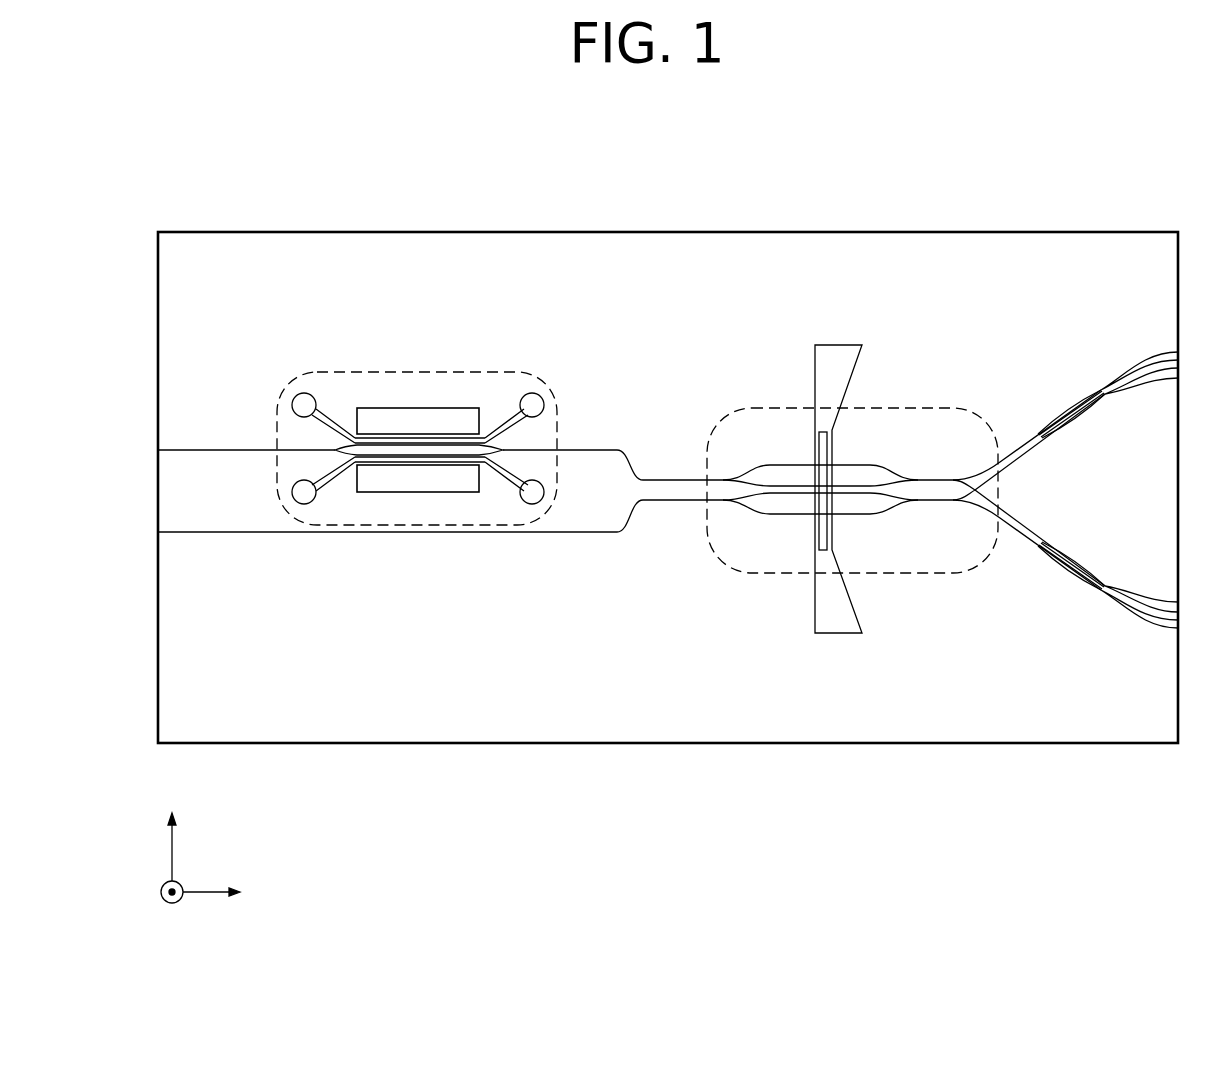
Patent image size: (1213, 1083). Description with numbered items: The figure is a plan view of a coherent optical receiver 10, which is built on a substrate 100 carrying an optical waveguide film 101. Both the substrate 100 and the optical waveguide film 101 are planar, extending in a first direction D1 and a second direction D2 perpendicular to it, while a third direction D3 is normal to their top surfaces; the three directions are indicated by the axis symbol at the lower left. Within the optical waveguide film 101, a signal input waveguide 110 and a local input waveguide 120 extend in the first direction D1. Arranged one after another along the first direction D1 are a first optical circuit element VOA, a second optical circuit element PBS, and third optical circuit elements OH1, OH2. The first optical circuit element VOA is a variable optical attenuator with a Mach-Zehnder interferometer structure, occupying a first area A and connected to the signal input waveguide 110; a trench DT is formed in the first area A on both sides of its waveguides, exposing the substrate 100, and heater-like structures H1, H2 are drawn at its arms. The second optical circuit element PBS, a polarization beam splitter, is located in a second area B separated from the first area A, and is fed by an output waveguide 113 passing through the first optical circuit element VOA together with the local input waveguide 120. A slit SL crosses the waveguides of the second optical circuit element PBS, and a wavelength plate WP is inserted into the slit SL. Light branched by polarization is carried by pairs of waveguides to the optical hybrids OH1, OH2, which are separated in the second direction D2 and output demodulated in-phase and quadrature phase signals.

The coherent optical receiver 10 is at (1171, 193).
The optical waveguide film 101 is at (667, 732).
The signal input waveguide 110 is at (205, 450).
The local input waveguide 120 is at (205, 532).
The output waveguide 113 is at (587, 450).
The substrate 100 is at (418, 486).
The first optical circuit element VOA is at (372, 389).
The first area A is at (486, 372).
The trench DT is at (437, 408).
The first heater H1 is at (534, 398).
The second heater H2 is at (536, 500).
The second area B is at (940, 408).
The slit SL is at (838, 345).
The wavelength plate WP is at (819, 438).
The second optical circuit element PBS is at (848, 441).
The third optical circuit element OH1 is at (1058, 393).
The third optical circuit element OH2 is at (1058, 587).
The first direction D1 is at (228, 892).
The second direction D2 is at (172, 834).
The third direction D3 is at (172, 905).